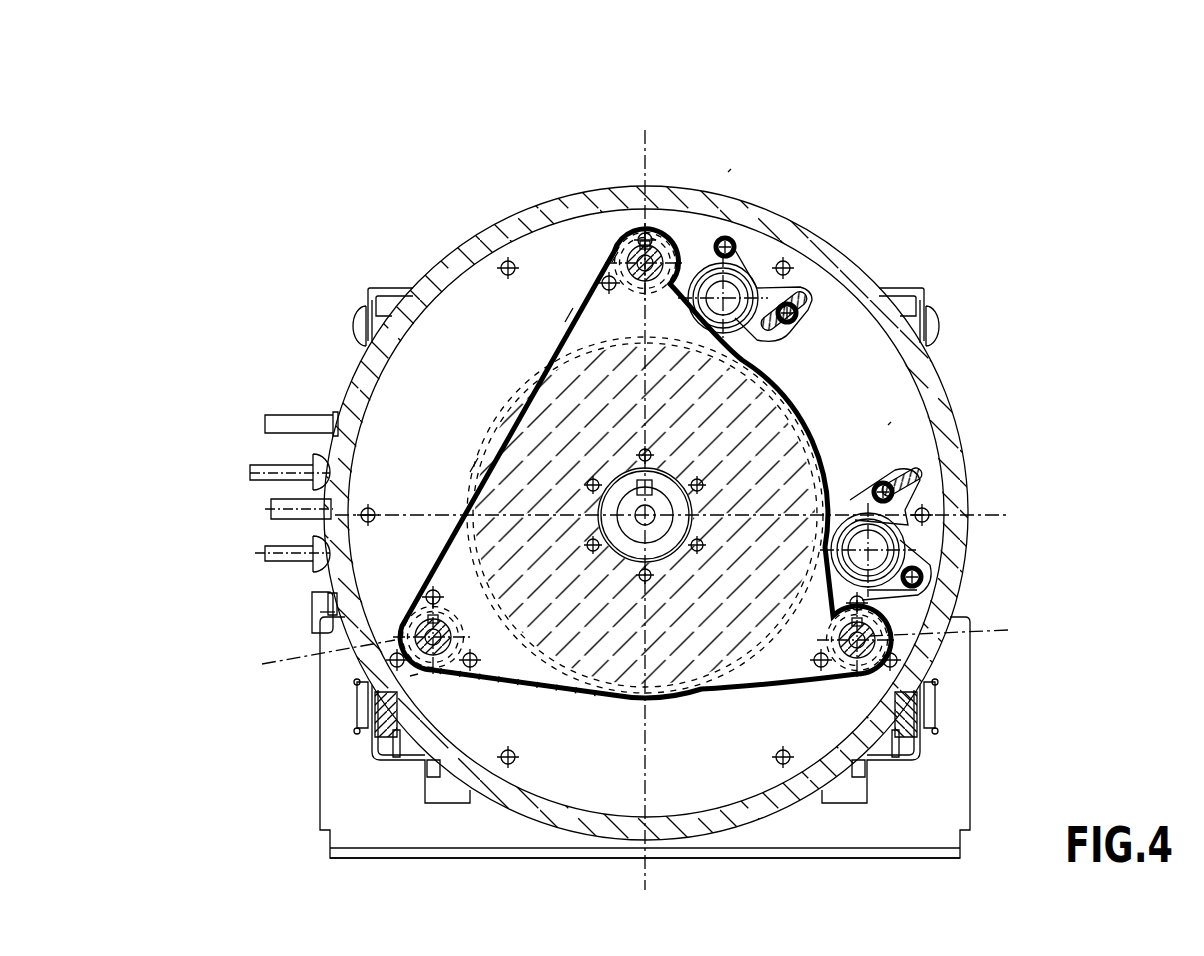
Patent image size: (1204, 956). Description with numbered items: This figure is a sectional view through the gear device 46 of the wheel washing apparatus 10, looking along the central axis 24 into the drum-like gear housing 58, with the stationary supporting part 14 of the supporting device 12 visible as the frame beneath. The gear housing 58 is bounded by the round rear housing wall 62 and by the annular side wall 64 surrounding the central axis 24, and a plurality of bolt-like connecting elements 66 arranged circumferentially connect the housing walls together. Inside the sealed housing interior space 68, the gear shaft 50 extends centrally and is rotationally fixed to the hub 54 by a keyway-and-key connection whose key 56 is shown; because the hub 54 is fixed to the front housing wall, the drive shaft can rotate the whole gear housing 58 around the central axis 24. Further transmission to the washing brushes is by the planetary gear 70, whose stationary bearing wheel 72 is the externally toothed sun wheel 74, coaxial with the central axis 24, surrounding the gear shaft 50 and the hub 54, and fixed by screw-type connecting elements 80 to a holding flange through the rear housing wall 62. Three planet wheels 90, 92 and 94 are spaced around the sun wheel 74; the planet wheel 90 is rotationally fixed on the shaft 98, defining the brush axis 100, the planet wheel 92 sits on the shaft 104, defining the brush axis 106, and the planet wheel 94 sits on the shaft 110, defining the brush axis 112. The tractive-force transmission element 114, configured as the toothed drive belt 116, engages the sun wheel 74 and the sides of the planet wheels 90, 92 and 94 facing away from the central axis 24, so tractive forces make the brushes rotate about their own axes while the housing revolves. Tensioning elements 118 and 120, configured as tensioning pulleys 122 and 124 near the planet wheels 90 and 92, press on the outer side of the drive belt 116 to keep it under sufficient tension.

The wheel washing apparatus 10 is at (986, 150).
The supporting device 12 is at (300, 805).
The stationary supporting part 14 is at (355, 820).
The central axis 24 is at (645, 515).
The gear device 46 is at (737, 165).
The gear shaft 50 is at (686, 498).
The hub 54 is at (625, 485).
The key 56 is at (656, 478).
The gear housing 58 is at (706, 545).
The rear housing wall 62 is at (690, 795).
The side wall 64 is at (918, 366).
The connecting elements 66 is at (503, 268).
The housing interior space 68 is at (888, 425).
The planetary gear 70 is at (348, 605).
The stationary bearing wheel 72 is at (558, 455).
The sun wheel 74 is at (622, 697).
The connecting elements 80 is at (710, 543).
The planet wheel 90 is at (672, 232).
The planet wheel 92 is at (910, 661).
The planet wheel 94 is at (425, 626).
The shaft 98 is at (612, 262).
The brush axis 100 is at (597, 185).
The shaft 104 is at (845, 660).
The brush axis 106 is at (692, 580).
The shaft 110 is at (412, 676).
The brush axis 112 is at (310, 659).
The tractive-force transmission element 114 is at (568, 323).
The drive belt 116 is at (470, 472).
The tensioning element 118 is at (748, 240).
The tensioning element 120 is at (905, 556).
The tensioning pulley 122 is at (760, 335).
The tensioning pulley 124 is at (900, 527).